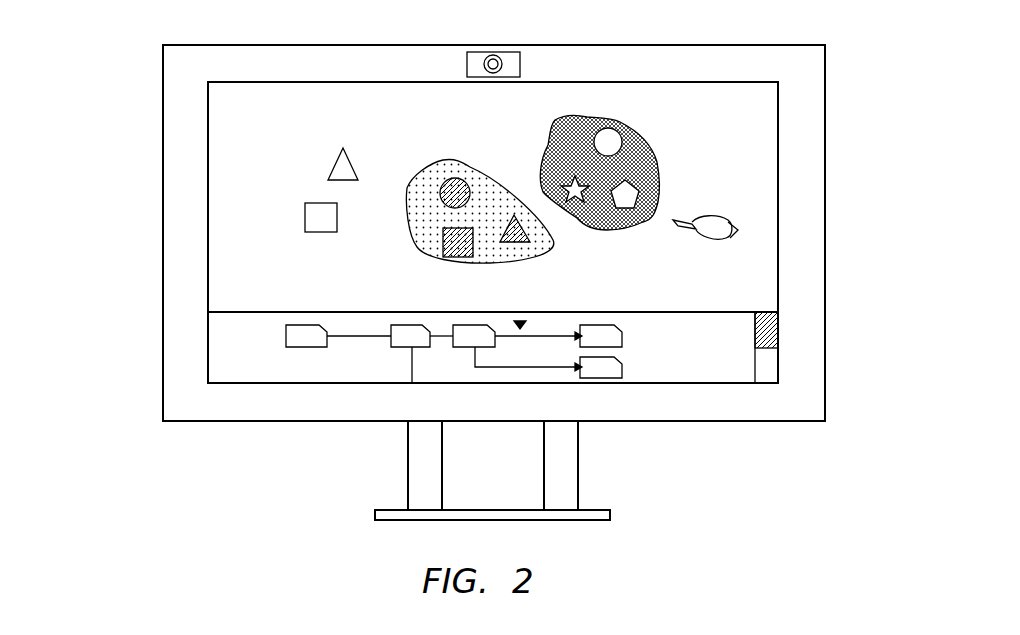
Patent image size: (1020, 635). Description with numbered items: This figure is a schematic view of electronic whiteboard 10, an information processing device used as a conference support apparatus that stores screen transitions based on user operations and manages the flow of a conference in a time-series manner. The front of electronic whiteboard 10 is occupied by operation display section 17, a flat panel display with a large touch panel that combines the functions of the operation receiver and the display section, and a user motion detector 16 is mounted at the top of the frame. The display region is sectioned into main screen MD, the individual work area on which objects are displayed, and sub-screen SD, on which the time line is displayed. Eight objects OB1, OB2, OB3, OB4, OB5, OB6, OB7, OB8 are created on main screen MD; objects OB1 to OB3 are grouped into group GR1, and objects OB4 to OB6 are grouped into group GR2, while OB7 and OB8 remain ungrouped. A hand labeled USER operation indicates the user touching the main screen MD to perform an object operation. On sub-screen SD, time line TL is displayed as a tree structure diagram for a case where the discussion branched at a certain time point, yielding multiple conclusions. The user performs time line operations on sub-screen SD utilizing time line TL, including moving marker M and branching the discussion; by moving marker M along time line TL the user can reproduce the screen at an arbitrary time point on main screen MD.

The electronic whiteboard 10 is at (826, 171).
The user motion detector 16 is at (520, 62).
The operation display section 17 is at (220, 221).
The main screen MD is at (234, 100).
The sub-screen SD is at (493, 324).
The group GR1 is at (412, 246).
The group GR2 is at (625, 230).
The object OB1 is at (455, 178).
The object OB2 is at (510, 243).
The object OB3 is at (452, 258).
The object OB4 is at (573, 205).
The object OB5 is at (640, 190).
The object OB6 is at (616, 138).
The object OB7 is at (335, 163).
The object OB8 is at (315, 217).
The time line TL is at (642, 354).
The marker M is at (527, 323).
The user operation (hand) USER is at (732, 233).